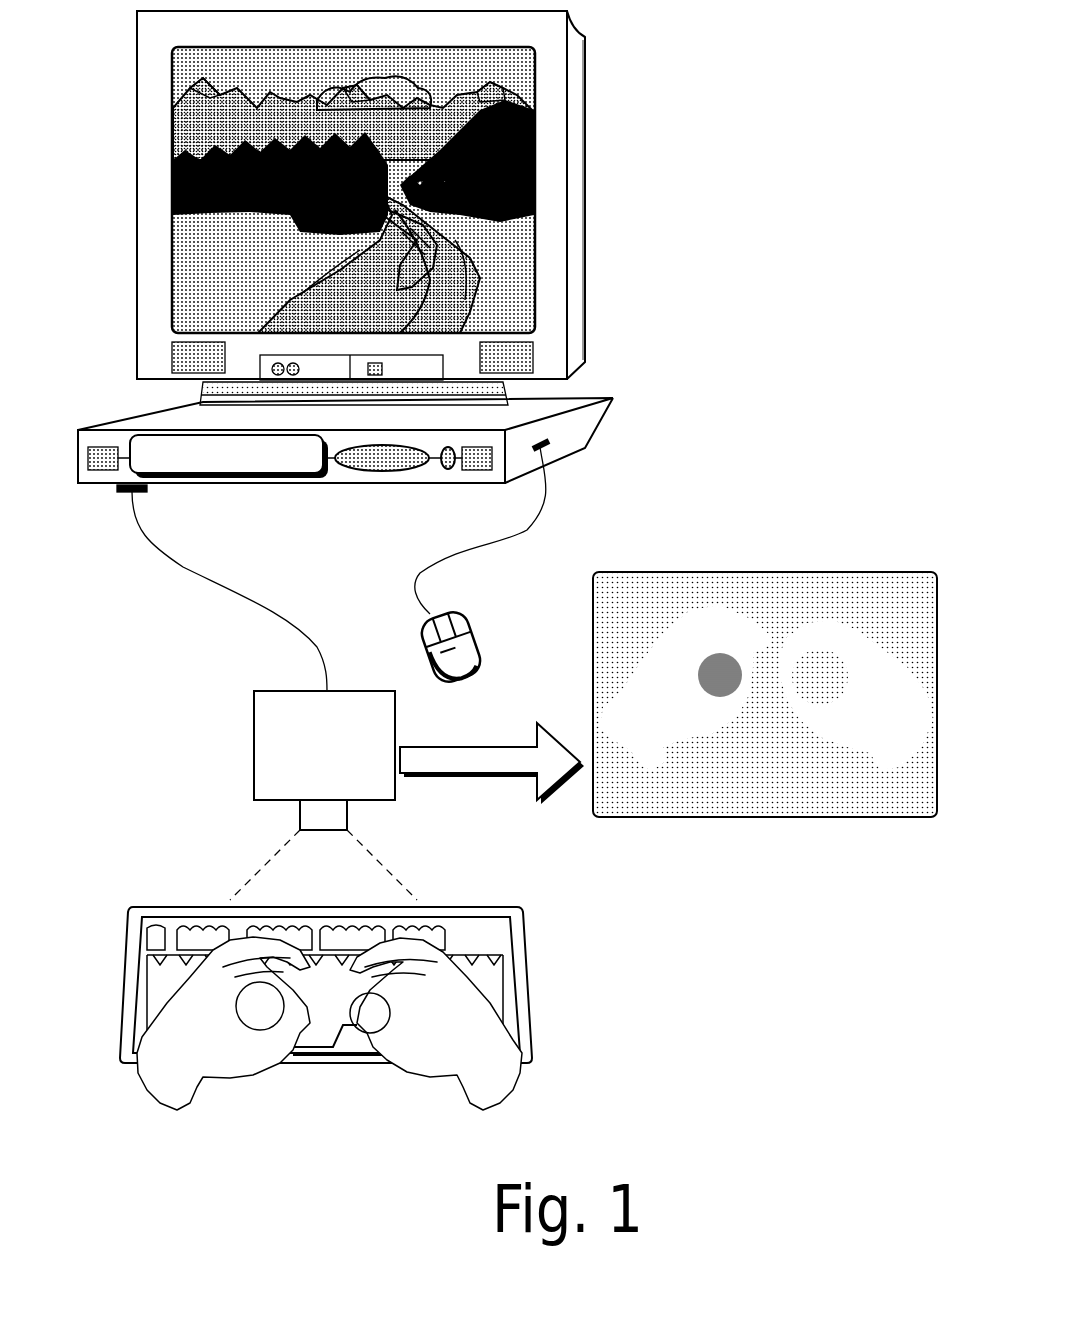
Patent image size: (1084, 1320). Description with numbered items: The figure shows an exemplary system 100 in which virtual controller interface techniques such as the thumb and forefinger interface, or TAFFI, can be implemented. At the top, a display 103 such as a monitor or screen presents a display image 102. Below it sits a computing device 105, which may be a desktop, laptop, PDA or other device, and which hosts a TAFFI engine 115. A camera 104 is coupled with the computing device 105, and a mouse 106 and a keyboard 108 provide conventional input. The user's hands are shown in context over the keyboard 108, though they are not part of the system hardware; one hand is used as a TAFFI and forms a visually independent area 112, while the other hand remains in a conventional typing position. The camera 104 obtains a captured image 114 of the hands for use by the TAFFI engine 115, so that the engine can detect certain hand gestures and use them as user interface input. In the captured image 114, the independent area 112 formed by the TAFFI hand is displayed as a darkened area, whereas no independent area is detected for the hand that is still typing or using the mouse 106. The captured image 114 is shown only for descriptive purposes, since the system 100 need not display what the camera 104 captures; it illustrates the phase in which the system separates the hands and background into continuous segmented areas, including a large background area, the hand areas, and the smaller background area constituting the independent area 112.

The exemplary system 100 is at (832, 64).
The display image 102 is at (512, 130).
The display 103 is at (553, 167).
The camera 104 is at (324, 760).
The computing device 105 is at (607, 398).
The mouse 106 is at (413, 630).
The keyboard 108 is at (527, 975).
The independent area 112 is at (262, 1012).
The captured image 114 is at (743, 817).
The TAFFI engine 115 is at (229, 456).